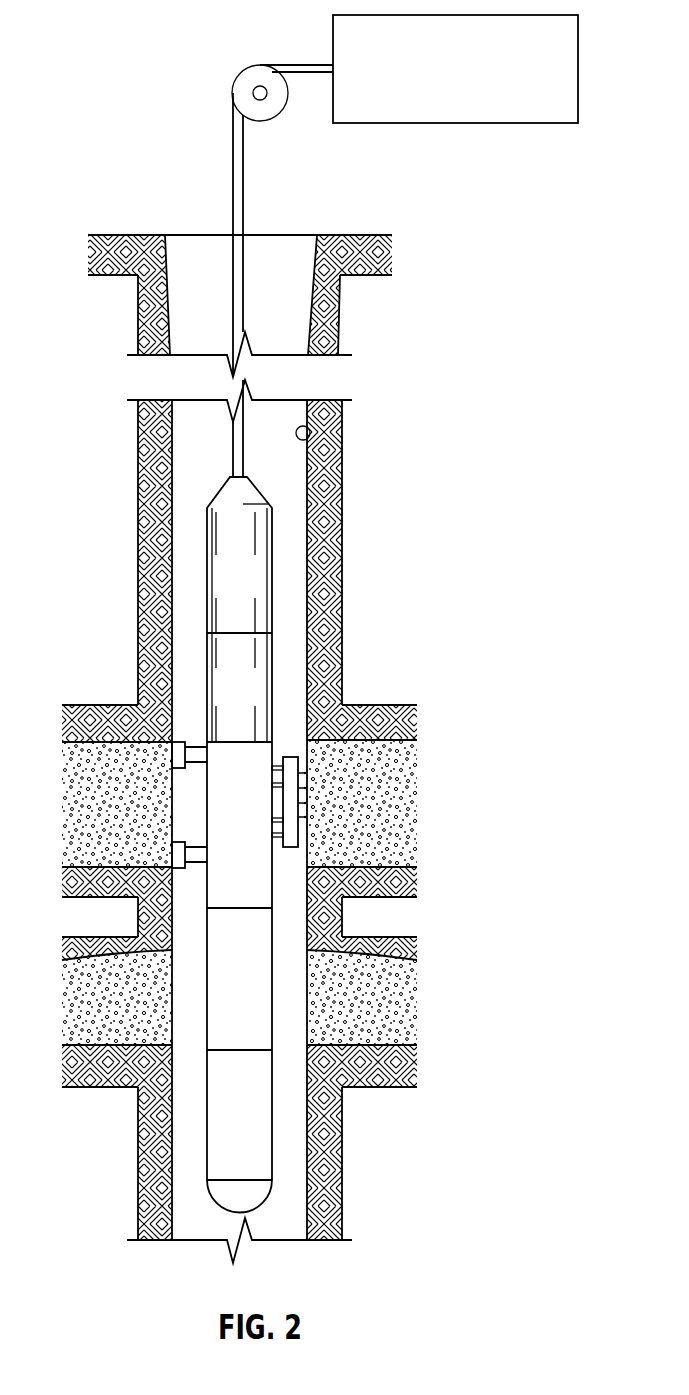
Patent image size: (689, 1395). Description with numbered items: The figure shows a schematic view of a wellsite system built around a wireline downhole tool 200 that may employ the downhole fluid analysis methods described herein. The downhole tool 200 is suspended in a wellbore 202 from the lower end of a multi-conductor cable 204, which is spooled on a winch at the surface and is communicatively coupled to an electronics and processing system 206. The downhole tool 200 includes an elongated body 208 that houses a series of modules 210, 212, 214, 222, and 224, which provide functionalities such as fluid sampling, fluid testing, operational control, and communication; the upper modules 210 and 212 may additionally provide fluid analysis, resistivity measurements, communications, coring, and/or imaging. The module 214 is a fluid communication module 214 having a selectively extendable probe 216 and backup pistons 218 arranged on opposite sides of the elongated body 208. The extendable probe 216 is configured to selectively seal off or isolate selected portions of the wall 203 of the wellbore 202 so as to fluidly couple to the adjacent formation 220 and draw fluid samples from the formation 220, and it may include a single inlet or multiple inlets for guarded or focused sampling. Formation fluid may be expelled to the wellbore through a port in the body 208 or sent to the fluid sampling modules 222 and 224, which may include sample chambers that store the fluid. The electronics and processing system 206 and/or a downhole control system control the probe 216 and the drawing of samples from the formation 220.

The wireline downhole tool 200 is at (249, 845).
The wellbore 202 is at (200, 426).
The wall of the wellbore 203 is at (309, 438).
The multi-conductor cable 204 is at (233, 248).
The electronics and processing system 206 is at (507, 124).
The elongated body 208 is at (272, 553).
The module 210 is at (263, 702).
The module 212 is at (263, 591).
The fluid communication module 214 is at (263, 837).
The selectively extendable probe 216 is at (307, 798).
The backup pistons 218 is at (172, 855).
The formation 220 is at (425, 819).
The fluid sampling module 222 is at (263, 982).
The fluid sampling module 224 is at (263, 1123).